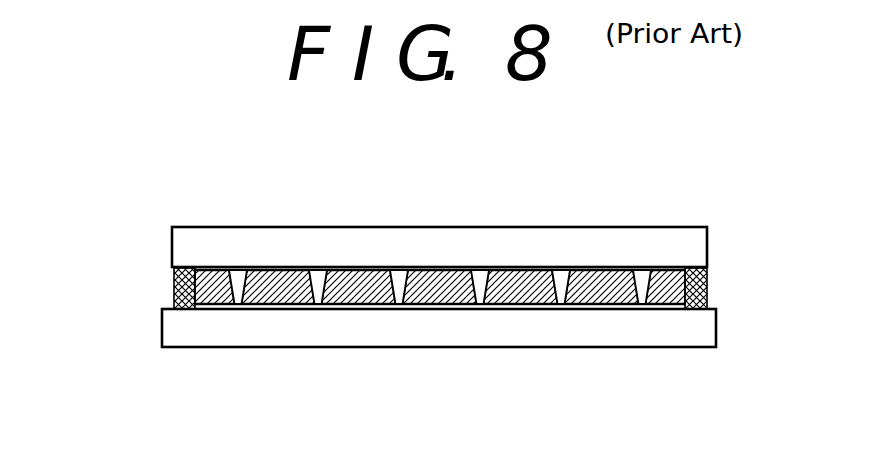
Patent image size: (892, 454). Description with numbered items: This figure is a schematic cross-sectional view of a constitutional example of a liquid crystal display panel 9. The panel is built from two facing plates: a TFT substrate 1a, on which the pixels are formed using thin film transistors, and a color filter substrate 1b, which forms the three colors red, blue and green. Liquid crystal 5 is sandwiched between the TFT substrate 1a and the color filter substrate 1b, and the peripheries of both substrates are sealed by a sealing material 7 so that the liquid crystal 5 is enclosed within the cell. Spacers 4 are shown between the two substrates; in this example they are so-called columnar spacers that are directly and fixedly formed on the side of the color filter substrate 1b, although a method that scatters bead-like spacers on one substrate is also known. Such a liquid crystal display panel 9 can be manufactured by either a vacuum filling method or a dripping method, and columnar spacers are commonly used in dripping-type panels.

The liquid crystal display panel 9 is at (651, 226).
The color filter substrate 1b is at (311, 243).
The TFT substrate 1a is at (347, 336).
The sealing material 7 is at (174, 290).
The spacers 4 is at (478, 282).
The liquid crystal 5 is at (518, 263).